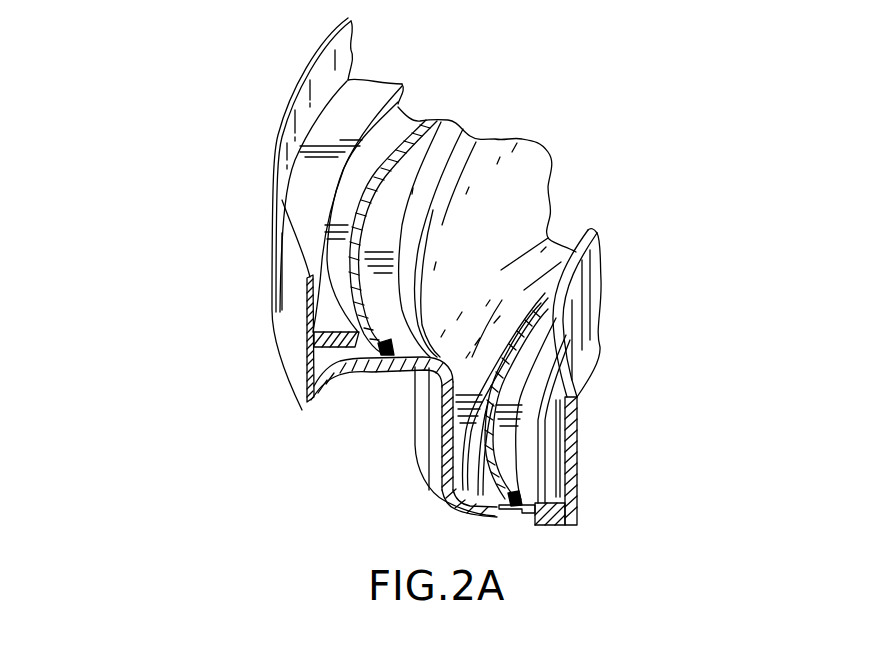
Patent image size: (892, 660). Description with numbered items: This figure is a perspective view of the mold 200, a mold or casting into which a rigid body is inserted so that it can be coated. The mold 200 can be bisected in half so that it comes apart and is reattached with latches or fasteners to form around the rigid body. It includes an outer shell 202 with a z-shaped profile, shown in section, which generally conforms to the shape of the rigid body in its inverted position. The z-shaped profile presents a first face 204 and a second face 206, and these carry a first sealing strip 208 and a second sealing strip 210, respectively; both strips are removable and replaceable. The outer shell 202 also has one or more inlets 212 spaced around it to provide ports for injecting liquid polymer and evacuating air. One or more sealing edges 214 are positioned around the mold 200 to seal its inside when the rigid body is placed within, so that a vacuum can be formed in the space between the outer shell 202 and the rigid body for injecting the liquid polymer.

The mold 200 is at (190, 112).
The outer shell 202 is at (307, 348).
The first face 204 is at (304, 386).
The second face 206 is at (482, 505).
The first sealing strip 208 is at (388, 353).
The second sealing strip 210 is at (500, 460).
The inlet 212 is at (508, 515).
The sealing edge 214 is at (312, 305).